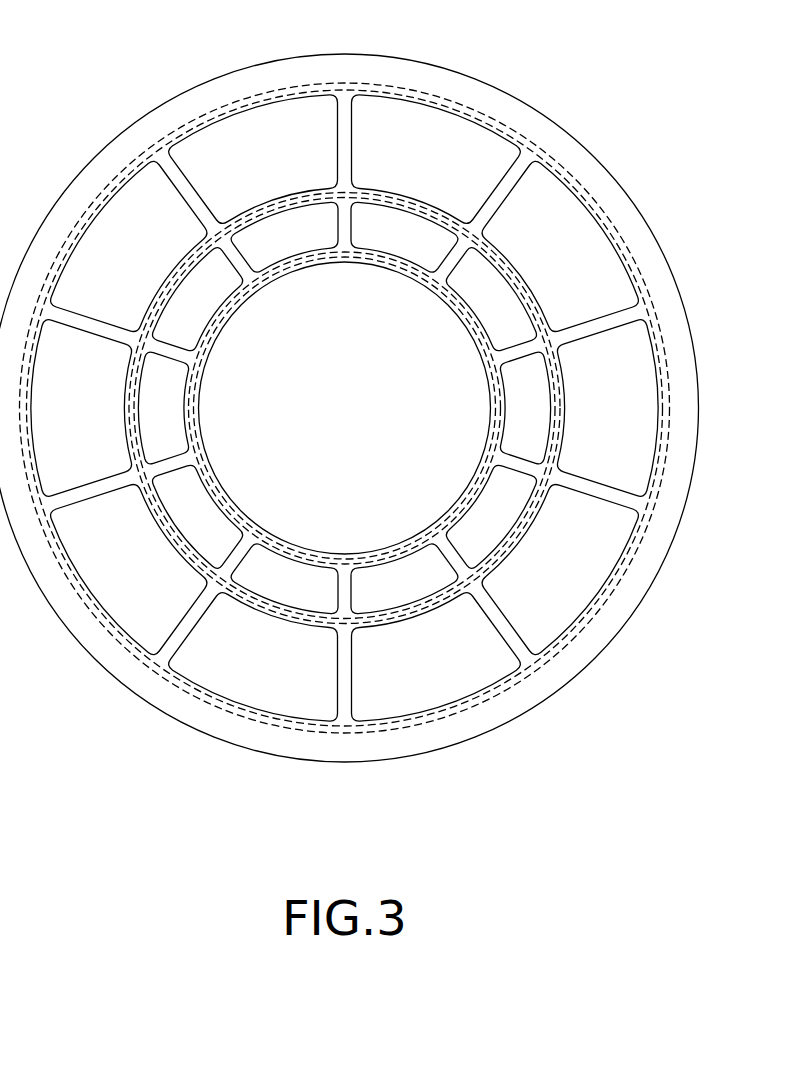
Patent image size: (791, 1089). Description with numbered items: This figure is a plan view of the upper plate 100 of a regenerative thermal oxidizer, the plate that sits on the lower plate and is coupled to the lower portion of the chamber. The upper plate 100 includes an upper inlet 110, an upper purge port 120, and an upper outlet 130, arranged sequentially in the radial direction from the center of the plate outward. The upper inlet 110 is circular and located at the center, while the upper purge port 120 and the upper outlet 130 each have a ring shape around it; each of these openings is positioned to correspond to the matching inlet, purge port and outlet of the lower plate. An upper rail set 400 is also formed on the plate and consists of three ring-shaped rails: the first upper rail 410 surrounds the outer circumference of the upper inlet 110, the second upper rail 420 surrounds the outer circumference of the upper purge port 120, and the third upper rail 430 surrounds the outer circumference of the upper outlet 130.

The upper plate 100 is at (587, 95).
The upper inlet 110 is at (366, 423).
The upper purge port 120 is at (407, 230).
The upper outlet 130 is at (245, 142).
The upper rail set 400 is at (345, 472).
The first upper rail 410 is at (375, 565).
The second upper rail 420 is at (440, 605).
The third upper rail 430 is at (345, 435).